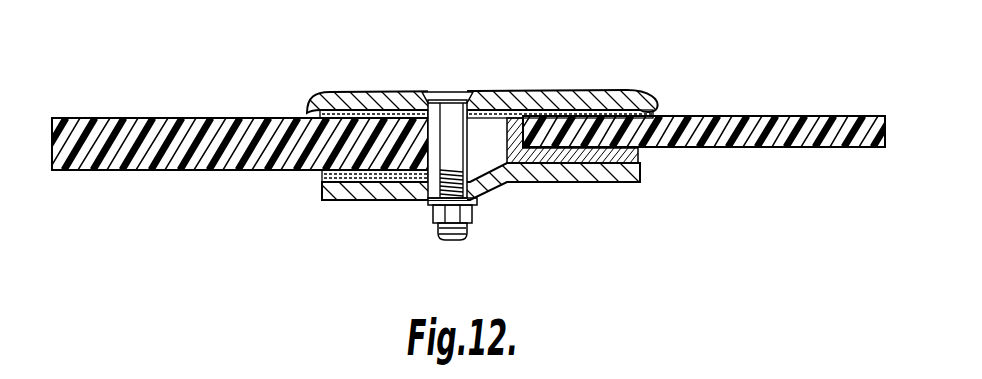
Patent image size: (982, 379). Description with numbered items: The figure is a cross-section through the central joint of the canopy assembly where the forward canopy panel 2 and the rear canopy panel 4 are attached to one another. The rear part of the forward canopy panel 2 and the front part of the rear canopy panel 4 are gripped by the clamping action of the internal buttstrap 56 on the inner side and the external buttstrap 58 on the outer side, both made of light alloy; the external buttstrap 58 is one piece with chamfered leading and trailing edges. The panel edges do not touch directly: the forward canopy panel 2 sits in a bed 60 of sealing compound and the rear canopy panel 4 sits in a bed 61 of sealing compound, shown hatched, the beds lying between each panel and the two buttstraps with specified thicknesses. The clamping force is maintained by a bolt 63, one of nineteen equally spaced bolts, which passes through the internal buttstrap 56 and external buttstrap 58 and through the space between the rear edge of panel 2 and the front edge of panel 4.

The forward canopy panel 2 is at (163, 162).
The rear canopy panel 4 is at (747, 133).
The internal buttstrap 56 is at (572, 172).
The external buttstrap 58 is at (545, 100).
The bed of sealing compound 60 is at (393, 103).
The bed of sealing compound 61 is at (608, 158).
The bolt 63 is at (455, 120).